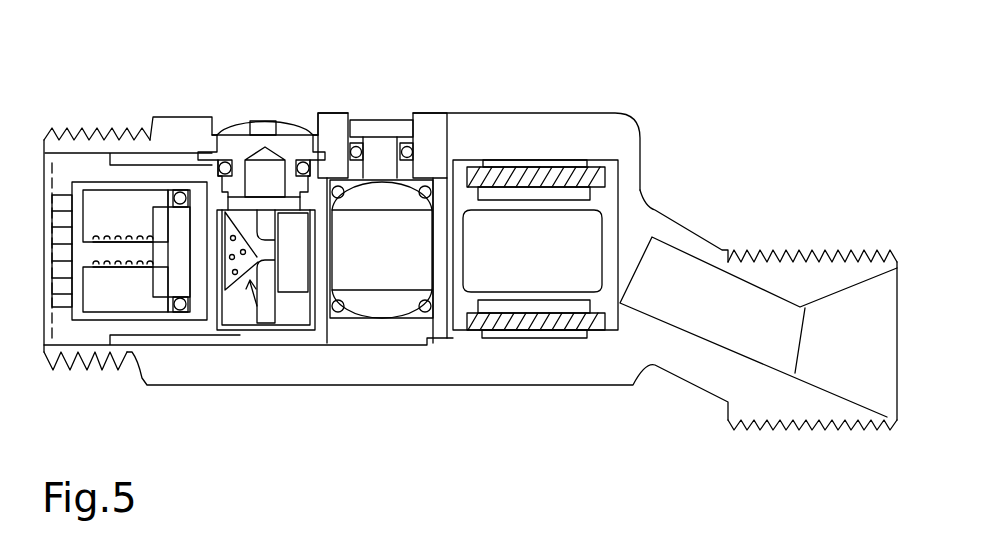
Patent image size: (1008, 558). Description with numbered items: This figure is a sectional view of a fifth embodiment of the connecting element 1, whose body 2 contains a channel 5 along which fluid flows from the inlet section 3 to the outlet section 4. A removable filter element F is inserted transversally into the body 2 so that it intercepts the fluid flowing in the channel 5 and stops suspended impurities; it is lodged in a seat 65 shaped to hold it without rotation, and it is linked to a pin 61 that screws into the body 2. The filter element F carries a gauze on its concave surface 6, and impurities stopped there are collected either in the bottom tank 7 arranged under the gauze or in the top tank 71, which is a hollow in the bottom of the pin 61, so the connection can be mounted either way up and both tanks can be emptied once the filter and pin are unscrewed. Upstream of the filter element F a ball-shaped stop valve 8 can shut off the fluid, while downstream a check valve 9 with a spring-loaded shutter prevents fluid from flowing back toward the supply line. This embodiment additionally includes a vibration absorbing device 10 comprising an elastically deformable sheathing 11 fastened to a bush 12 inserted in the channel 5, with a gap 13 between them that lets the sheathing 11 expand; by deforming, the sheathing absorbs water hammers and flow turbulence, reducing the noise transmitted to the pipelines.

The connecting element 1 is at (495, 82).
The body 2 is at (567, 363).
The inlet section 3 is at (872, 392).
The outlet section 4 is at (82, 136).
The channel 5 is at (717, 311).
The concave surface 6 is at (222, 332).
The bottom tank 7 is at (248, 318).
The stop valve 8 is at (383, 205).
The check valve 9 is at (65, 333).
The vibration absorbing device 10 is at (563, 235).
The elastically deformable portion 11 is at (612, 188).
The bush 12 is at (535, 321).
The gap 13 is at (533, 192).
The pin 61 is at (243, 120).
The seat 65 is at (272, 310).
The top tank 71 is at (265, 177).
The filter element F is at (257, 306).